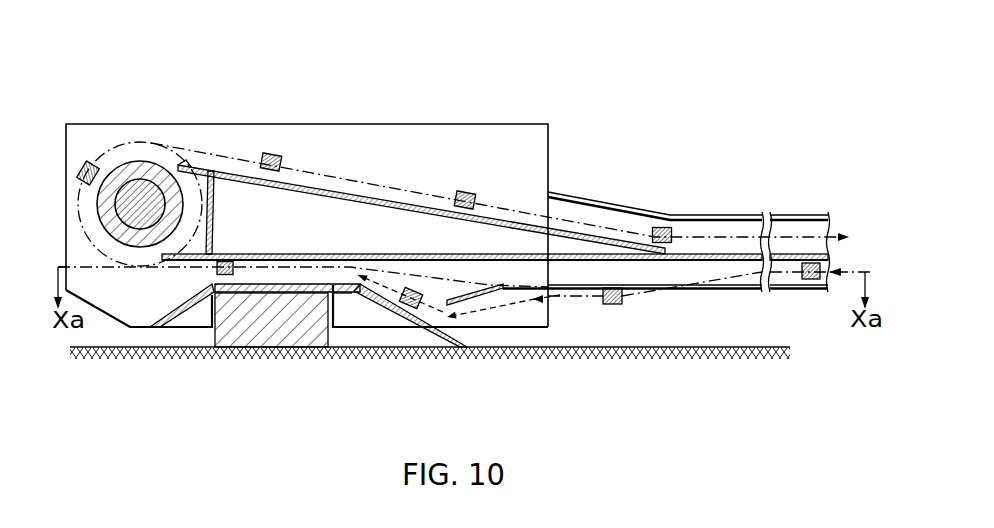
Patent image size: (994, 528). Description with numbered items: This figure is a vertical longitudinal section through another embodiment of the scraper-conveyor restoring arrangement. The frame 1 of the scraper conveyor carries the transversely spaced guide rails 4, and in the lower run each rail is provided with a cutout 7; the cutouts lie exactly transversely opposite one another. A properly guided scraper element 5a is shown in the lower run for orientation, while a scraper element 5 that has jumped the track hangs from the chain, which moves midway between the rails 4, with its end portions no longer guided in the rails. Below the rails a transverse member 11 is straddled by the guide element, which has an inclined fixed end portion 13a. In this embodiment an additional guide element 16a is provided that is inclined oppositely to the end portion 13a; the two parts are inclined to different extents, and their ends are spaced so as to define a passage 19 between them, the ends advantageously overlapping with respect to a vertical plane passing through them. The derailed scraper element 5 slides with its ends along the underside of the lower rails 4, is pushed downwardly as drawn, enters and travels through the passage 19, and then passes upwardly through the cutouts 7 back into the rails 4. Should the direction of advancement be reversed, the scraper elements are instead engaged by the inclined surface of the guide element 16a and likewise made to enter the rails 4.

The frame 1 is at (302, 125).
The cutout 7 is at (431, 294).
The scraper element 5 is at (615, 305).
The rail 4 is at (697, 270).
The scraper element 5a is at (810, 281).
The transverse member 11 is at (283, 328).
The end portion 13a is at (432, 336).
The passage 19 is at (460, 330).
The guide element 16a is at (503, 320).